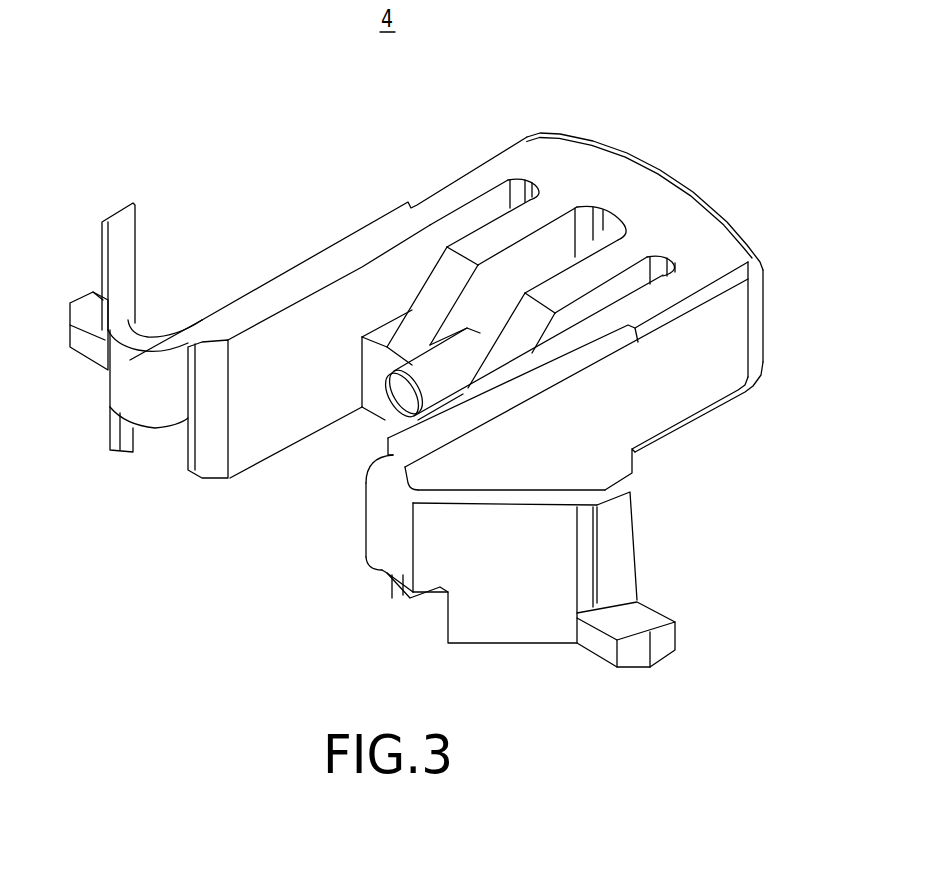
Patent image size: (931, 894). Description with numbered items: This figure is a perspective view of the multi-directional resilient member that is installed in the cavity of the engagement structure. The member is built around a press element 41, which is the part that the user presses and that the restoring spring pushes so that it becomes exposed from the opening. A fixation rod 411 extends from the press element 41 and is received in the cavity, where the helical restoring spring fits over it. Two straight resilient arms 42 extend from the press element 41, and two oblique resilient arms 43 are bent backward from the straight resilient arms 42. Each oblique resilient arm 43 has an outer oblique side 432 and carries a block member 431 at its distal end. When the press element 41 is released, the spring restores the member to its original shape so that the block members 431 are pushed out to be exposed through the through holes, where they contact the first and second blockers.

The press element 41 is at (657, 187).
The fixation rod 411 is at (387, 414).
The straight resilient arm 42 is at (308, 273).
The oblique resilient arm 43 is at (527, 493).
The block member 431 is at (657, 620).
The outer oblique side 432 is at (533, 573).